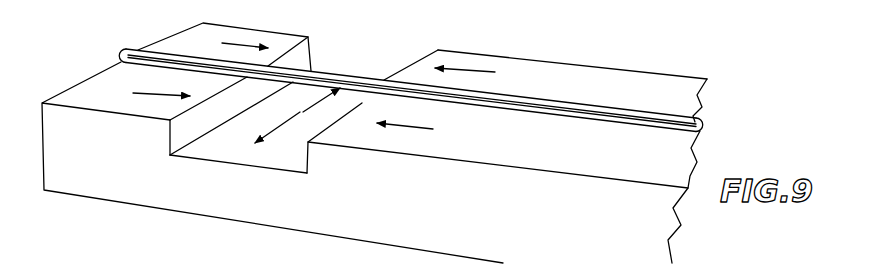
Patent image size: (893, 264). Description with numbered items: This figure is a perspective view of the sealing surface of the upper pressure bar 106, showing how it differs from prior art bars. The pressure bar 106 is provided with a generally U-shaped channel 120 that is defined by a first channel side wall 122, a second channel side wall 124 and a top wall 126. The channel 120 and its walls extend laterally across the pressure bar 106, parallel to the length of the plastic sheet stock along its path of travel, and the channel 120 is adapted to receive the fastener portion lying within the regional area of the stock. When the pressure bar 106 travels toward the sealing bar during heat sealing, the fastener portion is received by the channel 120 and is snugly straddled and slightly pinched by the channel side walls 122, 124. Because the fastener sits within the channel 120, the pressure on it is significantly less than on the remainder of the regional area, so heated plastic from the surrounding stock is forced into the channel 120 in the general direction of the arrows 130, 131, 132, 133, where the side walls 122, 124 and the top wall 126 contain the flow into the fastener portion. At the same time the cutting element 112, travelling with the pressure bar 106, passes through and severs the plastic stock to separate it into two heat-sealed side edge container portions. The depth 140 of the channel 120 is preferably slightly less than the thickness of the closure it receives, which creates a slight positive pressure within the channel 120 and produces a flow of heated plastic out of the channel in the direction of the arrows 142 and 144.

The pressure bar 106 is at (606, 74).
The cutting element 112 is at (139, 56).
The channel 120 is at (392, 72).
The channel side wall 122 is at (180, 132).
The channel side wall 124 is at (308, 155).
The top wall 126 is at (263, 157).
The arrow 130 is at (477, 69).
The arrow 131 is at (249, 43).
The arrow 132 is at (136, 93).
The arrow 133 is at (408, 127).
The depth of the channel 140 is at (167, 122).
The arrow 142 is at (314, 104).
The arrow 144 is at (268, 125).